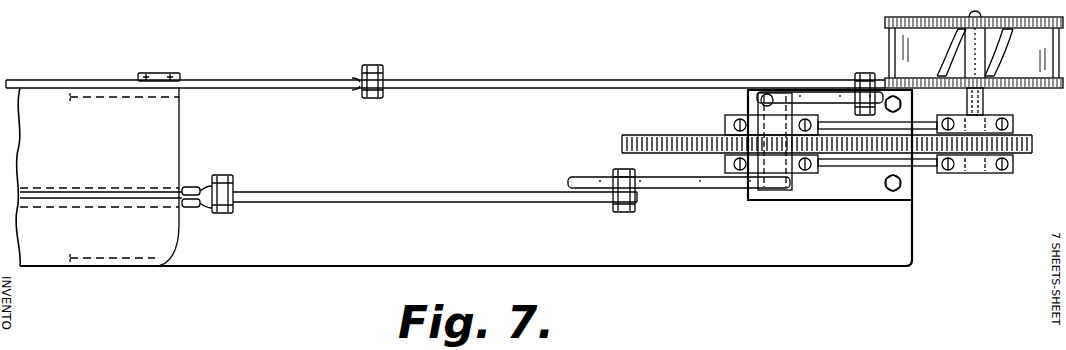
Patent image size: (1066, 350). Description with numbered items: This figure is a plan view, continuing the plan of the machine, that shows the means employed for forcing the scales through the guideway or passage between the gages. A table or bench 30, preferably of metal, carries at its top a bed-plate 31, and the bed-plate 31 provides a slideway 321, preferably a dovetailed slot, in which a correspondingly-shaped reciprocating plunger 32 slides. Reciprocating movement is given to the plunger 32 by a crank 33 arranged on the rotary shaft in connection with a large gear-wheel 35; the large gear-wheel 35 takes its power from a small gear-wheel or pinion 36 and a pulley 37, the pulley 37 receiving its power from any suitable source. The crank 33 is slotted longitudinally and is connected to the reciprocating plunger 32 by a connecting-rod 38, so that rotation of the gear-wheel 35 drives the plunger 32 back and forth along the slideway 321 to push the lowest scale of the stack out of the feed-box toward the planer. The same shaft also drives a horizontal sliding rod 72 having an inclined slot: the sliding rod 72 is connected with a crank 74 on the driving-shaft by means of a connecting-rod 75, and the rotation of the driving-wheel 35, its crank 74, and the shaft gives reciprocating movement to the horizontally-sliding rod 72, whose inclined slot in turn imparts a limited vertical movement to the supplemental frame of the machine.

The table or bench 30 is at (584, 177).
The bed-plate 31 is at (97, 177).
The reciprocating plunger 32 is at (52, 192).
The slideway 321 is at (107, 192).
The crank 33 is at (688, 189).
The large gear-wheel 35 is at (620, 146).
The small gear-wheel or pinion 36 is at (1032, 145).
The pulley 37 is at (923, 22).
The connecting-rod 38 is at (360, 197).
The horizontal sliding rod 72 is at (206, 80).
The crank 74 is at (805, 98).
The connecting-rod 75 is at (547, 79).